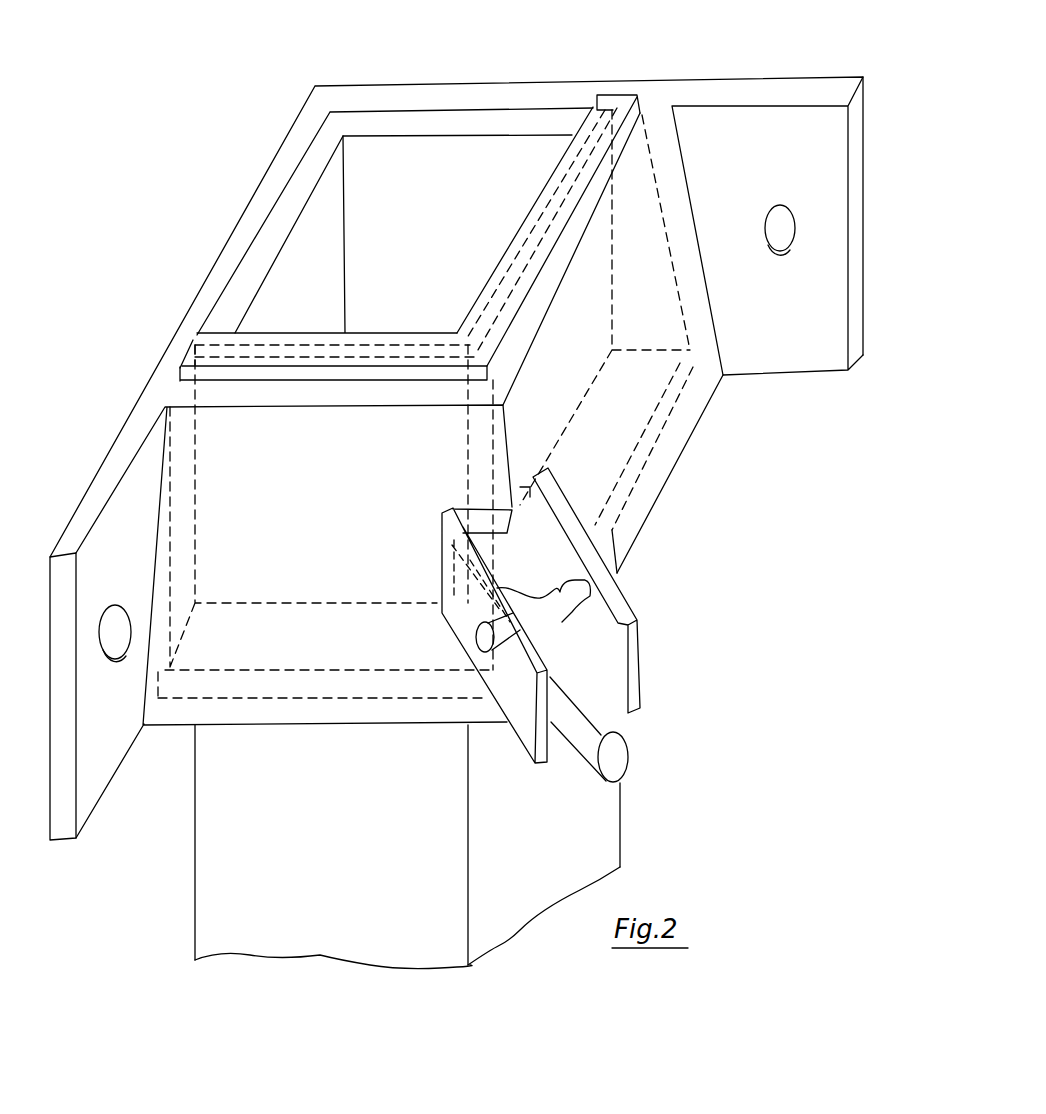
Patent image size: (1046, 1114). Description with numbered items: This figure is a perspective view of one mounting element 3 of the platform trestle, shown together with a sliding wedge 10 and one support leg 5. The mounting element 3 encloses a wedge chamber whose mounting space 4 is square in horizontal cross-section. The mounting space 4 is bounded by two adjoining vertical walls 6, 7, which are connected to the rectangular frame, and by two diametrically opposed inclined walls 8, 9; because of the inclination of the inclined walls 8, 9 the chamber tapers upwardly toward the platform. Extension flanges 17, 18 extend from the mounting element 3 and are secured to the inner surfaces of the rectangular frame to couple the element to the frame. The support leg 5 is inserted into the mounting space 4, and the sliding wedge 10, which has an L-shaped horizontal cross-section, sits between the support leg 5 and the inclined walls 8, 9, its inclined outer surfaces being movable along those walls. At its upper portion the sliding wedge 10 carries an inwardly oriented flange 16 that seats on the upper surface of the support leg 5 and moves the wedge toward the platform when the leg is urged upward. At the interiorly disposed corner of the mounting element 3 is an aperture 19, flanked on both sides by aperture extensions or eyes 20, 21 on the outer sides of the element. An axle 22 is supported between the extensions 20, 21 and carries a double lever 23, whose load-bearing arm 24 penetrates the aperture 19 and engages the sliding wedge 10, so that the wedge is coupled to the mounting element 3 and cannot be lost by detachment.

The mounting element 3 is at (441, 82).
The mounting space 4 is at (380, 218).
The support leg 5 is at (480, 128).
The vertical wall 6 is at (382, 95).
The vertical wall 7 is at (265, 200).
The inclined wall 8 is at (210, 455).
The inclined wall 9 is at (640, 262).
The sliding wedge 10 is at (622, 107).
The inwardly oriented flange 16 is at (498, 270).
The extension flange 17 is at (800, 142).
The extension flange 18 is at (106, 757).
The aperture 19 is at (521, 492).
The aperture extension 20 is at (523, 735).
The aperture extension 21 is at (640, 655).
The axle 22 is at (573, 593).
The double lever 23 is at (600, 717).
The load-bearing arm 24 is at (500, 553).